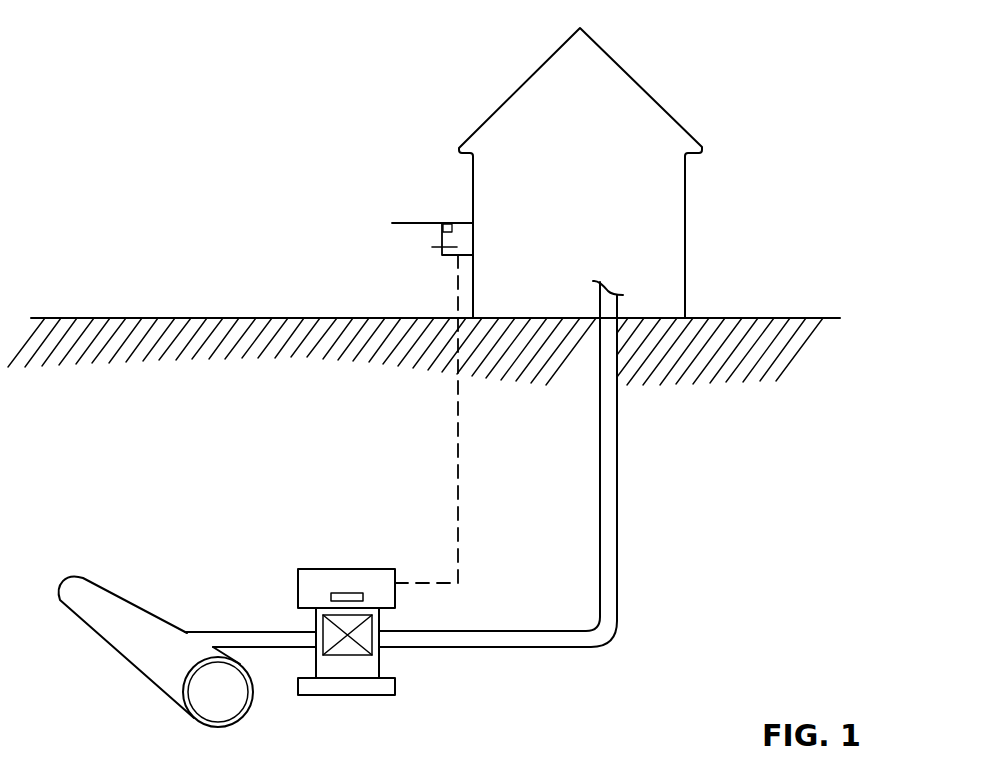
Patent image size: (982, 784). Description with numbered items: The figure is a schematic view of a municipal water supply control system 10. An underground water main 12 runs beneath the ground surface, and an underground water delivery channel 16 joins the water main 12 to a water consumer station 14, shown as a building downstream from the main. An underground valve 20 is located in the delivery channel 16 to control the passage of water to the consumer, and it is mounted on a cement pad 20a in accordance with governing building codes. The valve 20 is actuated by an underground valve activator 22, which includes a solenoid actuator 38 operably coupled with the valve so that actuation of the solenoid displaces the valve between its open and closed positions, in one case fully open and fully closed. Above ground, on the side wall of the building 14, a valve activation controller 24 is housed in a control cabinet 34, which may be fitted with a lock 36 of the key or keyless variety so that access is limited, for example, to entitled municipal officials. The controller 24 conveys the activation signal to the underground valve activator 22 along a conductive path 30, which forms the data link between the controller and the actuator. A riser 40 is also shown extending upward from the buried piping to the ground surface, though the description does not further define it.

The municipal water supply control system 10 is at (166, 268).
The underground water main 12 is at (107, 613).
The water consumer station 14 is at (663, 81).
The underground water delivery channel 16 is at (233, 640).
The underground valve 20 is at (394, 616).
The cement pad 20a is at (387, 686).
The underground valve activator 22 is at (318, 548).
The valve activation controller 24 is at (420, 188).
The conductive path 30 is at (458, 458).
The control cabinet 34 is at (432, 247).
The lock 36 is at (392, 223).
The solenoid actuator 38 is at (358, 595).
The riser pipe 40 is at (521, 532).